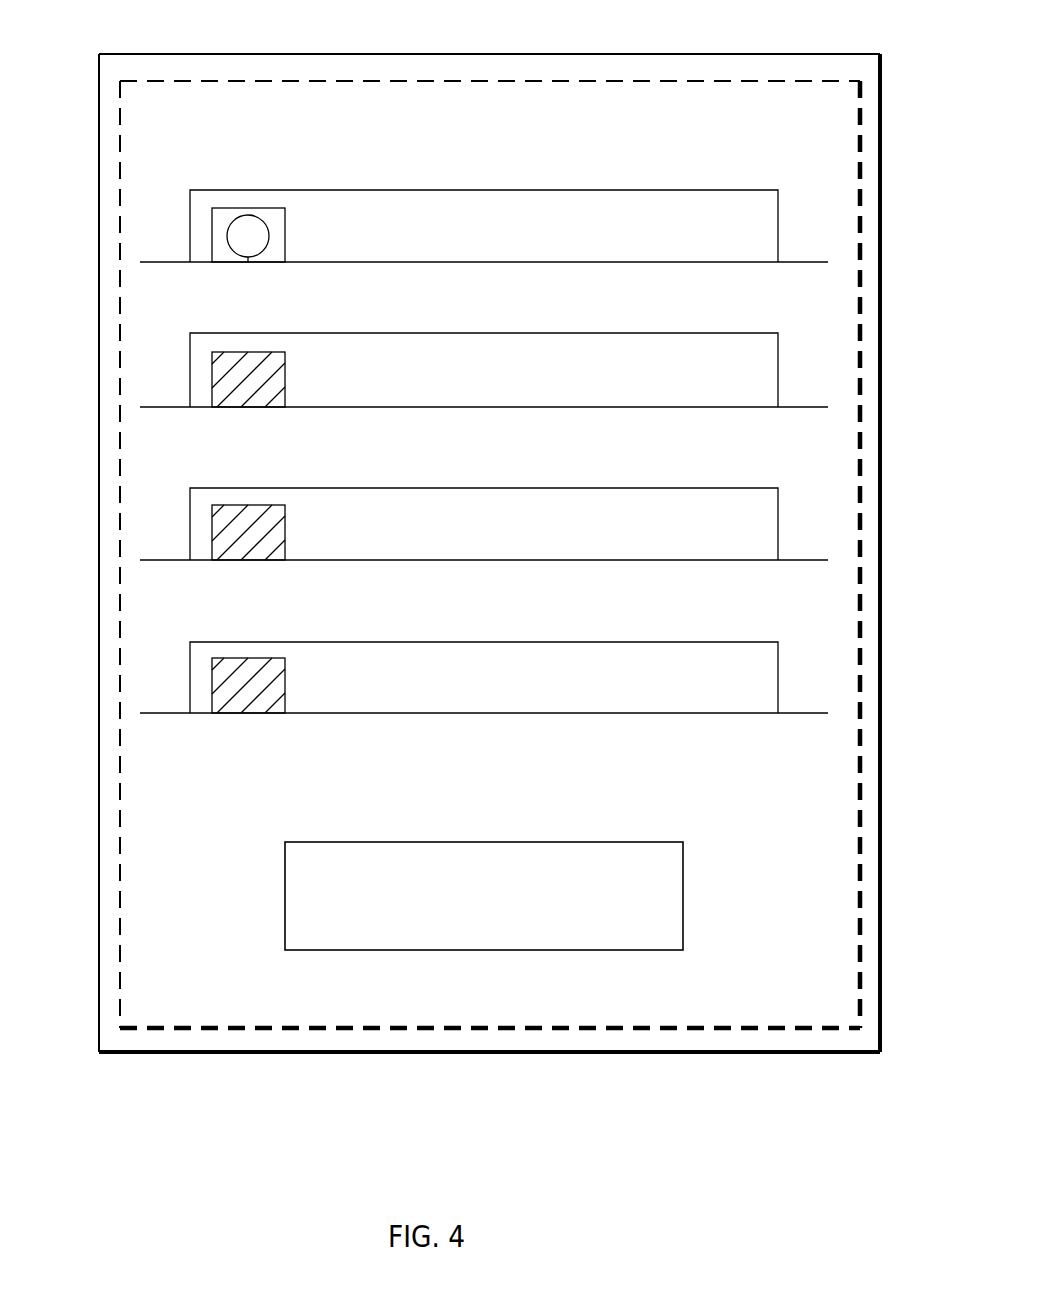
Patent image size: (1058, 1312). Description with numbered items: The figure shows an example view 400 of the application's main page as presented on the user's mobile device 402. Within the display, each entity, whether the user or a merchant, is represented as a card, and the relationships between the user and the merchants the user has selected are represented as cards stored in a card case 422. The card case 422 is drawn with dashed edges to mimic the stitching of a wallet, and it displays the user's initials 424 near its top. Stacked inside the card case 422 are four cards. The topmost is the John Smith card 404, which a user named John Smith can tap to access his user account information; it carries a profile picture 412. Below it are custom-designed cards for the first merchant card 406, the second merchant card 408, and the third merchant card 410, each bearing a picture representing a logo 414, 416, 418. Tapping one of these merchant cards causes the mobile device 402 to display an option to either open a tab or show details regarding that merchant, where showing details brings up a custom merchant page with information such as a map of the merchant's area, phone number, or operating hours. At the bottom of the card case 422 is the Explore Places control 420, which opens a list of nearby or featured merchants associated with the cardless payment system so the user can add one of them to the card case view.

The main page view 400 is at (104, 1120).
The mobile device 402 is at (205, 54).
The John Smith card 404 is at (398, 190).
The Merchant 1 card 406 is at (388, 333).
The Merchant 2 card 408 is at (378, 488).
The Merchant 3 card 410 is at (388, 642).
The profile picture 412 is at (243, 208).
The logo picture 414 is at (243, 352).
The logo picture 416 is at (243, 505).
The logo picture 418 is at (243, 658).
The Explore Places option 420 is at (683, 900).
The card case 422 is at (358, 81).
The user's initials 424 is at (485, 98).